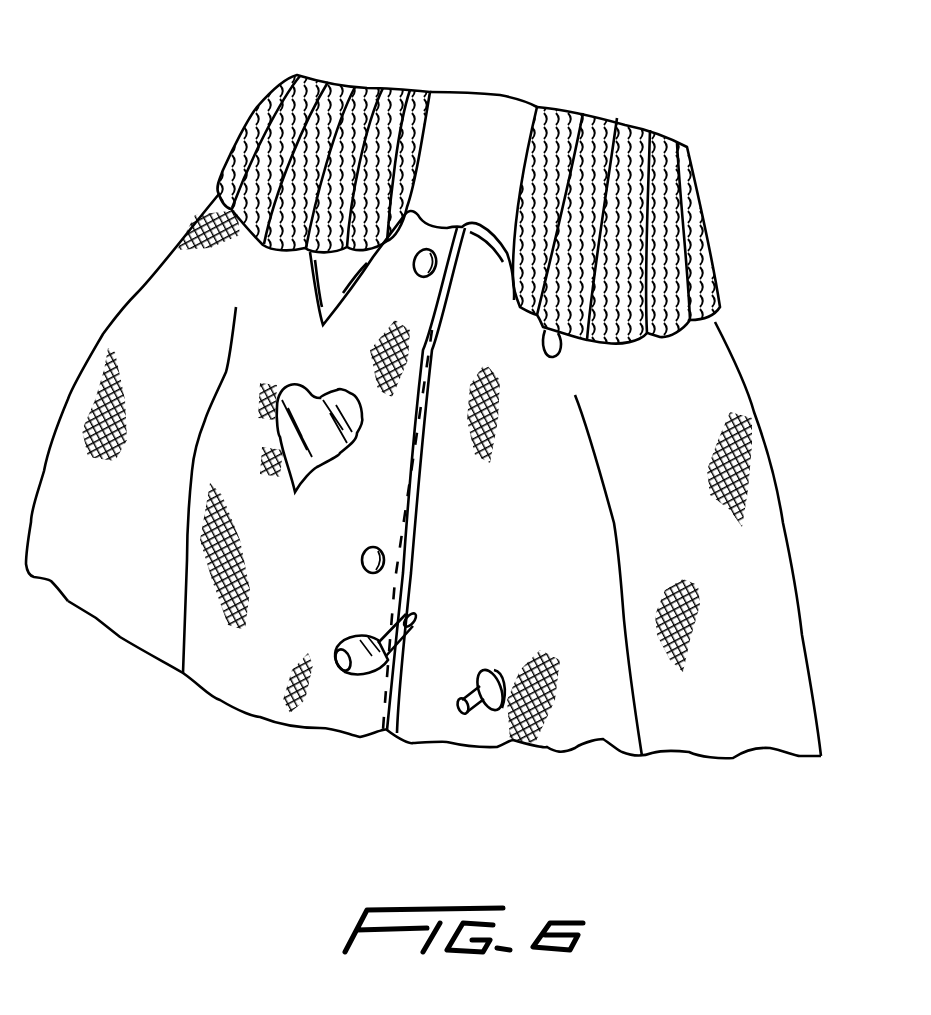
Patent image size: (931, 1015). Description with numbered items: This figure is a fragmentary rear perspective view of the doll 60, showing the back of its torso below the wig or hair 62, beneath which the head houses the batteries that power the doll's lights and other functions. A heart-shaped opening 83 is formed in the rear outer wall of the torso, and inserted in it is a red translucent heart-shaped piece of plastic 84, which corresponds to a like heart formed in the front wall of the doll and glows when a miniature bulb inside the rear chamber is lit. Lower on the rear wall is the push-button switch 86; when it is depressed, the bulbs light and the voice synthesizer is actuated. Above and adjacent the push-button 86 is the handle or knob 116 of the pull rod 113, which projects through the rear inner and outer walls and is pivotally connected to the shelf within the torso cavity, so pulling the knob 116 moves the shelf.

The doll 60 is at (678, 105).
The wig or hair 62 is at (697, 210).
The heart-shaped opening 83 is at (307, 393).
The heart-shaped piece of plastic 84 is at (323, 455).
The push-button switch 86 is at (467, 717).
The pull rod 113 is at (400, 640).
The handle or knob 116 is at (377, 680).